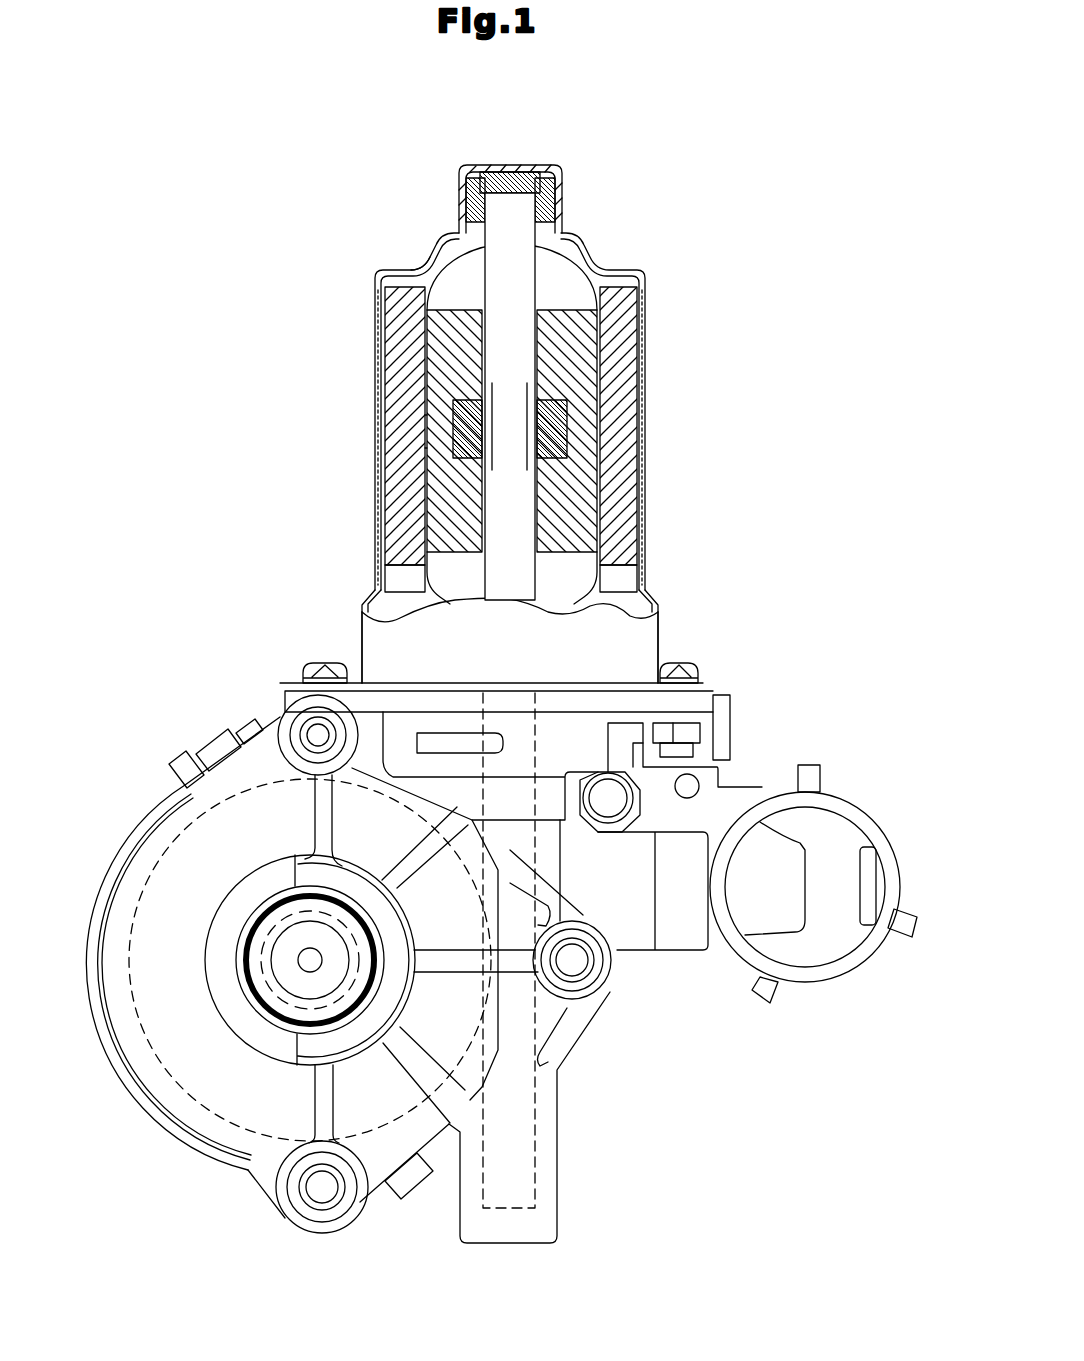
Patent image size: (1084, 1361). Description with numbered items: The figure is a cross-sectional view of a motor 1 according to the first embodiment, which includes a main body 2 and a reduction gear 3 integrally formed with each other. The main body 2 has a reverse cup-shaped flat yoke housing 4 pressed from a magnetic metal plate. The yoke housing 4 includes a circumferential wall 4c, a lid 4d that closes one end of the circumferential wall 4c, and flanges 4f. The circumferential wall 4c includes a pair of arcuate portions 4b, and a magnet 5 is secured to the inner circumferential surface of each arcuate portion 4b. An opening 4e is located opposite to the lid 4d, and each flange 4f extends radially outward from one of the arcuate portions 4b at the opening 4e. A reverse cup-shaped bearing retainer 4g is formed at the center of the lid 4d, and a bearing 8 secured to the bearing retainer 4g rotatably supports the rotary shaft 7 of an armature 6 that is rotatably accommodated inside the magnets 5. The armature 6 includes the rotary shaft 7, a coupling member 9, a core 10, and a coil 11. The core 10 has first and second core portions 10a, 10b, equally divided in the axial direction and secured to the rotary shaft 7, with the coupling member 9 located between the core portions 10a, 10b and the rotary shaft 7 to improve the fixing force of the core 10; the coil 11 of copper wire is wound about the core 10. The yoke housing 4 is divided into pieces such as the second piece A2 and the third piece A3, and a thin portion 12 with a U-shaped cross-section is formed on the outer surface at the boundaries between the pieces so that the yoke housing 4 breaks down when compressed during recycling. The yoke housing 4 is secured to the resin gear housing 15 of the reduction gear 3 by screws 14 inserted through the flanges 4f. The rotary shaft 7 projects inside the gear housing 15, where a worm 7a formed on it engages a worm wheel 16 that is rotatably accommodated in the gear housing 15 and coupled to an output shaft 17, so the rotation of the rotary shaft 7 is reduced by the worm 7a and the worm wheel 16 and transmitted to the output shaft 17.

The motor 1 is at (762, 213).
The main body 2 is at (648, 272).
The reduction gear 3 is at (265, 723).
The yoke housing 4 is at (647, 290).
The arcuate portion 4b is at (373, 333).
The circumferential wall 4c is at (533, 425).
The lid 4d is at (418, 268).
The opening 4e is at (563, 700).
The flange 4f is at (298, 684).
The bearing retainer 4g is at (563, 196).
The magnet 5 is at (388, 376).
The armature 6 is at (597, 507).
The rotary shaft 7 is at (495, 598).
The worm 7a is at (537, 1035).
The bearing 8 is at (473, 192).
The coupling member 9 is at (570, 452).
The core 10 is at (297, 410).
The first core portion 10a is at (433, 412).
The second core portion 10b is at (437, 445).
The coil 11 is at (447, 253).
The thin portion 12 is at (385, 276).
The screw 14 is at (320, 662).
The gear housing 15 is at (752, 787).
The worm wheel 16 is at (160, 853).
The output shaft 17 is at (268, 952).
The second piece A2 is at (647, 328).
The third piece A3 is at (558, 174).